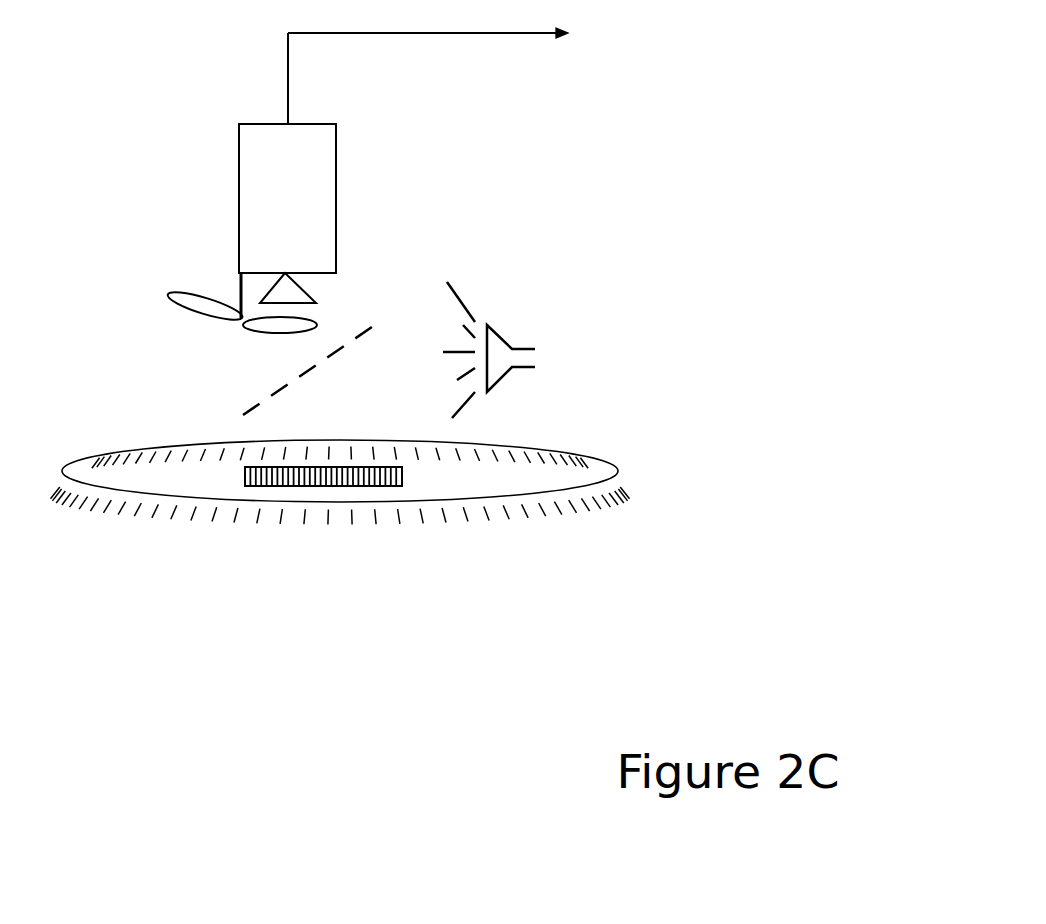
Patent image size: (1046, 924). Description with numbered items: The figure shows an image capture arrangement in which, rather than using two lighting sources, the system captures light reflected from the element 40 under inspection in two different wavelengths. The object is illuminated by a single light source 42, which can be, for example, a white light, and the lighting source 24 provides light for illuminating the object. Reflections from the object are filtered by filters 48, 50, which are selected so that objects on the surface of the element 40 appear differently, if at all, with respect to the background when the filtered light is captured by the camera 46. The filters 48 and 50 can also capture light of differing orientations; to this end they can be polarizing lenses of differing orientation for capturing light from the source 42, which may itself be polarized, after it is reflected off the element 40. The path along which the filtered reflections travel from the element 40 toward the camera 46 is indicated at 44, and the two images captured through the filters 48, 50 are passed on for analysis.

The lighting source 24 is at (132, 448).
The element 40 is at (316, 486).
The light source 42 is at (517, 342).
The optical axis 44 is at (262, 392).
The camera 46 is at (243, 172).
The filter 48 is at (187, 290).
The filter 50 is at (318, 318).